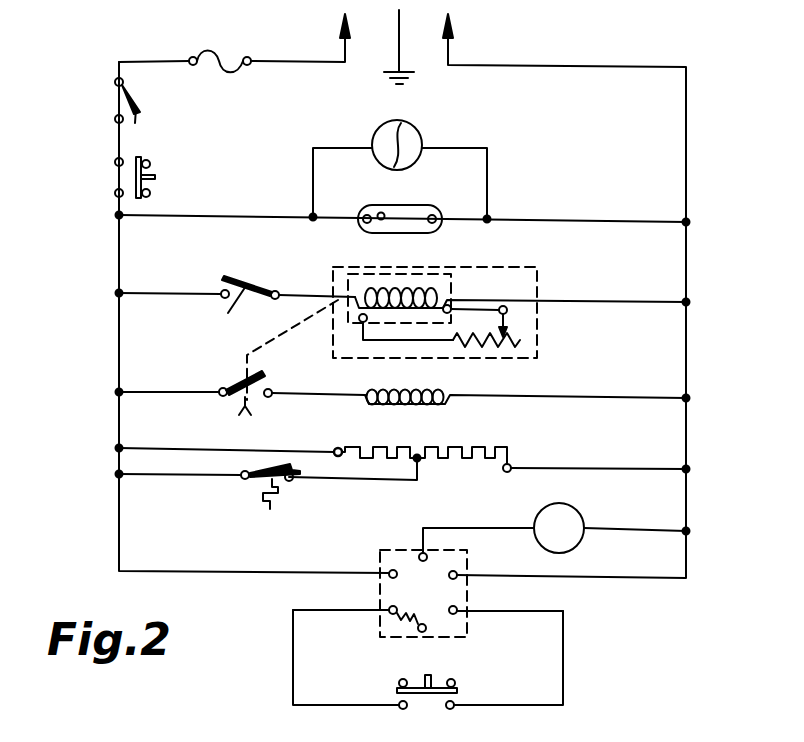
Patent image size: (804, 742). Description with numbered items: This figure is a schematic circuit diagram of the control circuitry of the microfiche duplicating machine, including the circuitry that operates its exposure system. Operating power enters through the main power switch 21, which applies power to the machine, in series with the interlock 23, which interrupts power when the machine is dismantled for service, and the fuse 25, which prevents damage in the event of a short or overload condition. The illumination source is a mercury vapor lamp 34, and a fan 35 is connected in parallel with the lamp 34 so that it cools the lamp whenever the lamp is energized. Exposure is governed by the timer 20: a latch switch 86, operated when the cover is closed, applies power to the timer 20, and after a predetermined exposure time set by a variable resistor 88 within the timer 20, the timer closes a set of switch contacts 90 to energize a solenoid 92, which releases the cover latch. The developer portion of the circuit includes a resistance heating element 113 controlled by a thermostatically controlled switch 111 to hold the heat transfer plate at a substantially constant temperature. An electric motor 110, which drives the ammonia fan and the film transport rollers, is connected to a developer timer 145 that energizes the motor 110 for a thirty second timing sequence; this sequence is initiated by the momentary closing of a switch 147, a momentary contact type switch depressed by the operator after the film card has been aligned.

The fuse 25 is at (209, 52).
The interlock 23 is at (124, 95).
The main power switch 21 is at (134, 177).
The fan 35 is at (412, 137).
The mercury vapor lamp 34 is at (410, 213).
The timer 20 is at (538, 273).
The latch switch 86 is at (237, 309).
The variable resistor 88 is at (520, 341).
The switch contacts 90 is at (240, 380).
The solenoid 92 is at (415, 393).
The resistance heating element 113 is at (445, 442).
The thermostatically controlled switch 111 is at (283, 479).
The electric motor 110 is at (574, 518).
The developer timer 145 is at (386, 591).
The switch 147 is at (432, 680).